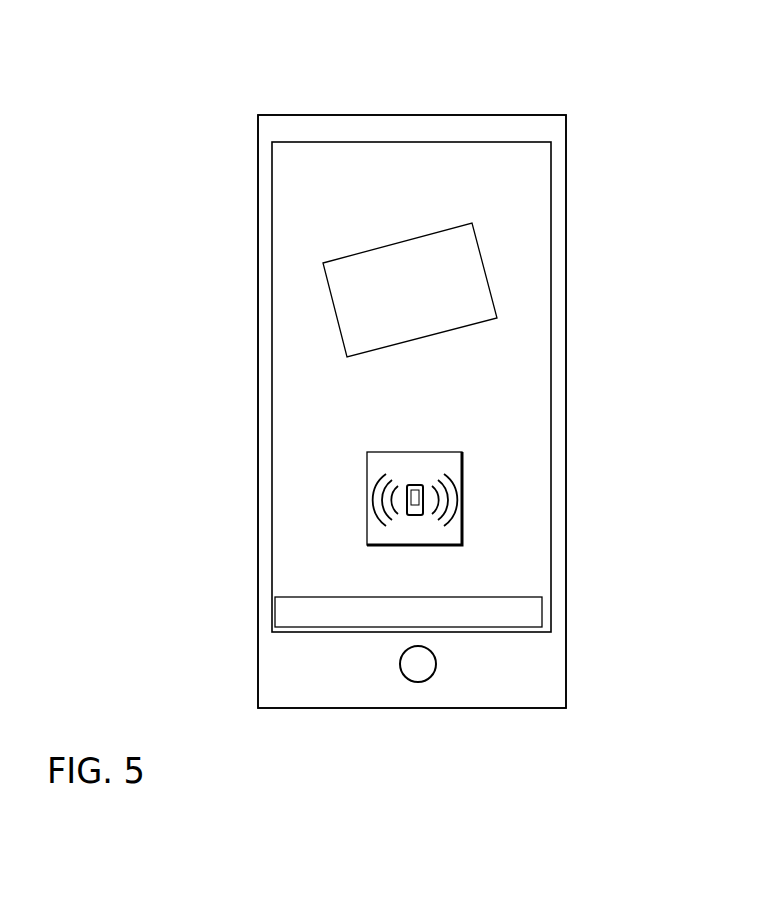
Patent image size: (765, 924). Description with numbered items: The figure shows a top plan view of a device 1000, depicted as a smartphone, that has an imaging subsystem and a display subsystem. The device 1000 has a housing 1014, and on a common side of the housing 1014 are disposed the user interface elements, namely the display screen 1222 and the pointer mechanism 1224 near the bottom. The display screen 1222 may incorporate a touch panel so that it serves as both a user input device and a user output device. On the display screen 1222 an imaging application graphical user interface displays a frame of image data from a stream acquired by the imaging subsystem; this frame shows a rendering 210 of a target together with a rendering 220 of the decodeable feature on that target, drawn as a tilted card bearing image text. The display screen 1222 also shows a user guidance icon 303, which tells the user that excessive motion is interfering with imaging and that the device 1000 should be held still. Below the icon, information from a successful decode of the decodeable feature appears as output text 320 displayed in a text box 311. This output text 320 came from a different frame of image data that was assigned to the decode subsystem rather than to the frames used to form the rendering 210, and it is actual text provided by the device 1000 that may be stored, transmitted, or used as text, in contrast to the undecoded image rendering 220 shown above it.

The device 1000 is at (180, 92).
The housing 1014 is at (258, 300).
The display screen 1222 is at (272, 393).
The rendering of target 210 is at (495, 299).
The rendering of decodeable feature 220 is at (475, 275).
The user guidance icon 303 is at (466, 497).
The text box 311 is at (517, 597).
The output text 320 is at (281, 613).
The pointer mechanism 1224 is at (420, 682).